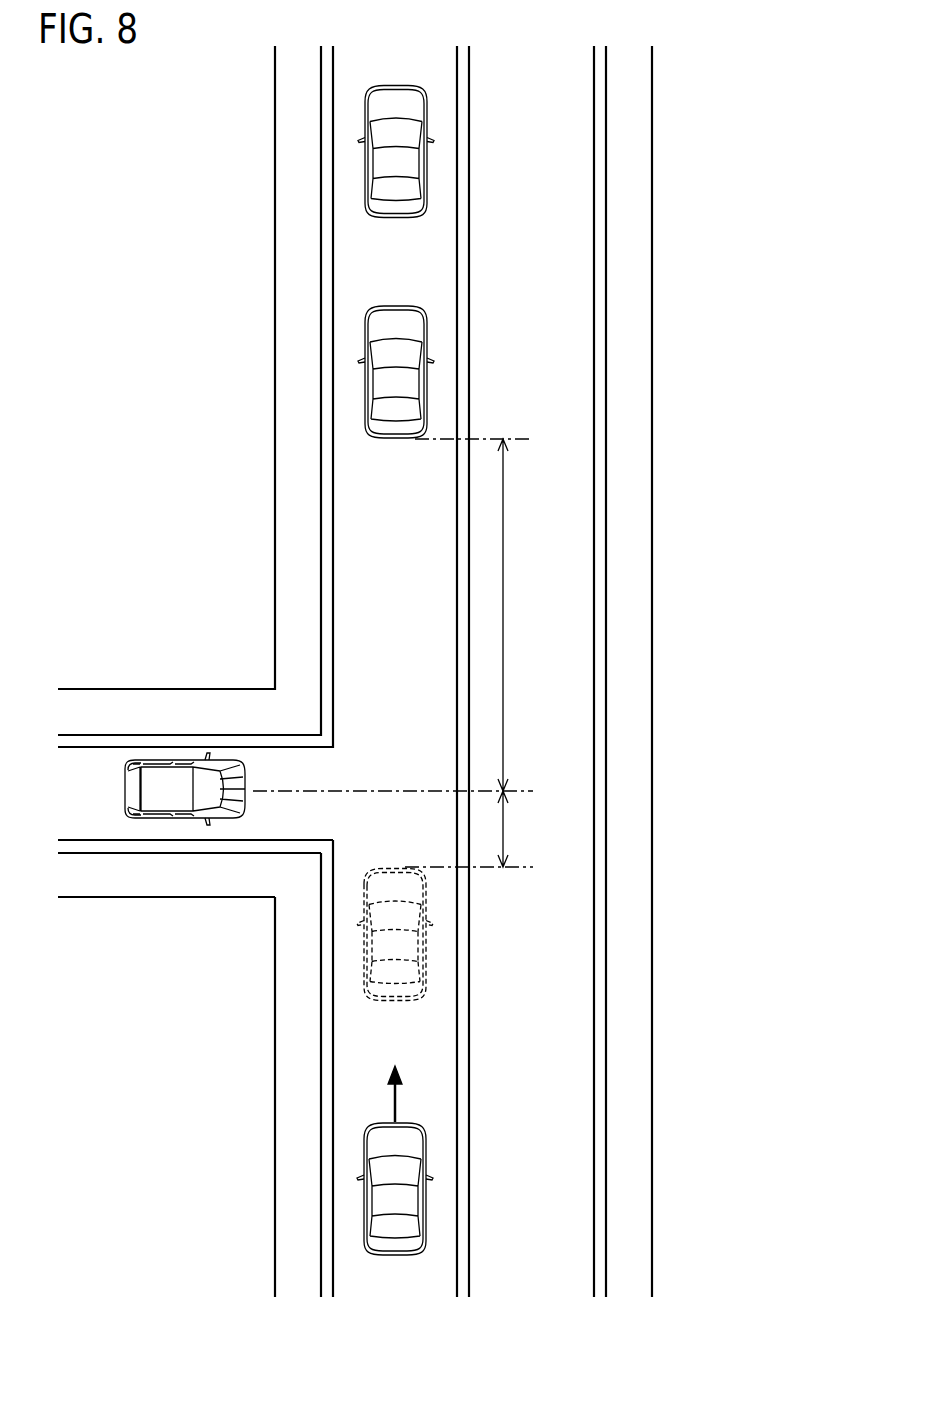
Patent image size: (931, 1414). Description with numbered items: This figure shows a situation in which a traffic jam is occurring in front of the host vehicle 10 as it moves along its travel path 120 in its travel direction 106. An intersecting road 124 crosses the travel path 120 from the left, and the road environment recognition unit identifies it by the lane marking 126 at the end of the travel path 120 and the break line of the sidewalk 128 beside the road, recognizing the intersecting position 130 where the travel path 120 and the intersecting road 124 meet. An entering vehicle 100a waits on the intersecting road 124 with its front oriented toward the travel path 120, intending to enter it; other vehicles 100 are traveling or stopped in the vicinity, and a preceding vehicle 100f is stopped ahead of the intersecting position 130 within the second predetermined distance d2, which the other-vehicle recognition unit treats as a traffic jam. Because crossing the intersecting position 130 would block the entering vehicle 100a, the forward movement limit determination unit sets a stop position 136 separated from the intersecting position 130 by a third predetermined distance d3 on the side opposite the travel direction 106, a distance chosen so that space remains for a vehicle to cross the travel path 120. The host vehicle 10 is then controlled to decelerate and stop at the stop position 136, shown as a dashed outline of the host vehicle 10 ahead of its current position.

The host vehicle 10 is at (425, 955).
The other vehicle 100 is at (423, 174).
The preceding vehicle 100f is at (422, 327).
The entering vehicle 100a is at (172, 765).
The travel direction 106 is at (395, 1102).
The travel path 120 is at (355, 1081).
The intersecting road 124 is at (99, 820).
The lane marking 126 is at (318, 1145).
The sidewalk 128 is at (297, 1033).
The intersecting position 130 is at (393, 770).
The stop position 136 is at (520, 868).
The second predetermined distance d2 is at (474, 615).
The third predetermined distance d3 is at (515, 829).